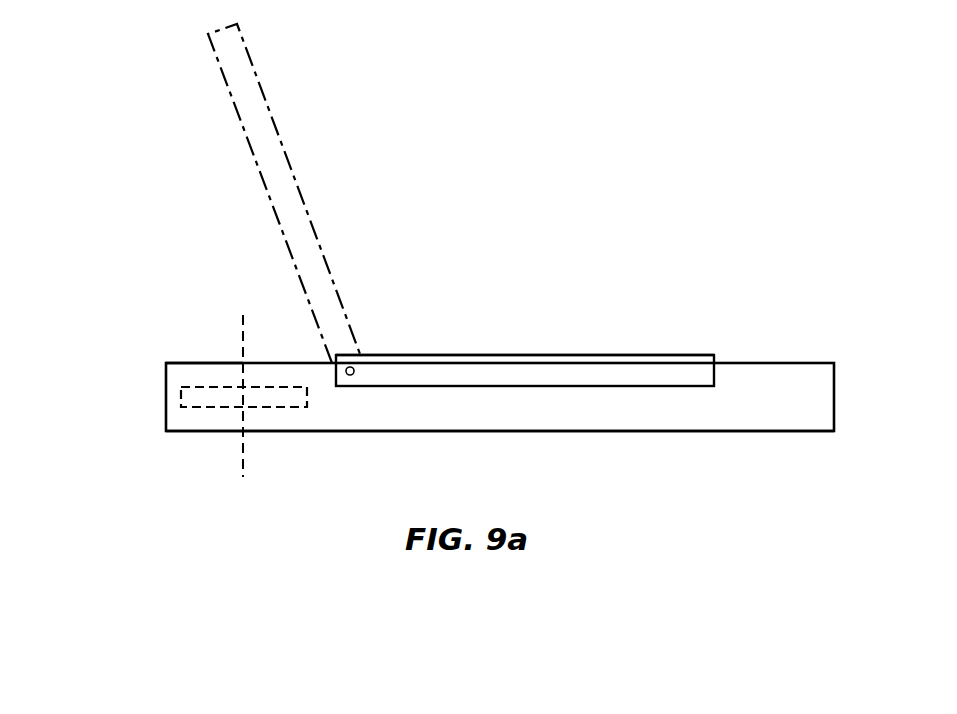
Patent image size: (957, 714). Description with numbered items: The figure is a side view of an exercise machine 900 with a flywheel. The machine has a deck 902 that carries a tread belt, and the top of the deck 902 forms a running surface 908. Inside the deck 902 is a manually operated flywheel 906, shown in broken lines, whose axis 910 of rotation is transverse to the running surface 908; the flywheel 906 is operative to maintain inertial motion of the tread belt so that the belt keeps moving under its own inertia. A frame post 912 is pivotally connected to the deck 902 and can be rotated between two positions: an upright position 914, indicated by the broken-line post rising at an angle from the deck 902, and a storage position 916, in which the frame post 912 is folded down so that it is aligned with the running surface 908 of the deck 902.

The exercise machine 900 is at (182, 150).
The deck 902 is at (787, 360).
The flywheel 906 is at (218, 393).
The running surface 908 is at (190, 363).
The axis 910 is at (242, 471).
The frame post 912 is at (396, 365).
The upright position 914 is at (408, 148).
The storage position 916 is at (527, 343).